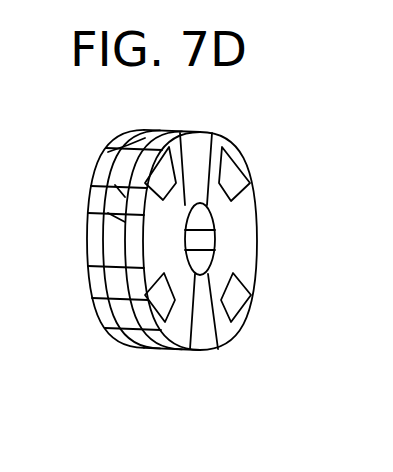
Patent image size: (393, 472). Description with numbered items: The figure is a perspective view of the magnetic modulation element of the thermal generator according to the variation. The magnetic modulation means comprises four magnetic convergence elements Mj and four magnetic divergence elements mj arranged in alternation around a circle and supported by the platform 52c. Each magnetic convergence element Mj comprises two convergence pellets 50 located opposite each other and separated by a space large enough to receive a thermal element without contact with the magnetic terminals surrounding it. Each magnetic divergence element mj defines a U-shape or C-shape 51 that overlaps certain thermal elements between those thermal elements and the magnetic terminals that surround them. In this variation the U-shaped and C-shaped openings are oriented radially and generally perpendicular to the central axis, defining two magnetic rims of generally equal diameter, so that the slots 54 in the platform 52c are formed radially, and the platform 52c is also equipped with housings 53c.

The convergence pellets 50 is at (197, 335).
The U-shape or C-shape 51 is at (150, 345).
The platform 52c is at (240, 219).
The housings 53c is at (183, 252).
The projection 54 is at (125, 177).
The magnetic divergence elements mj is at (203, 153).
The magnetic convergence elements Mj is at (243, 172).